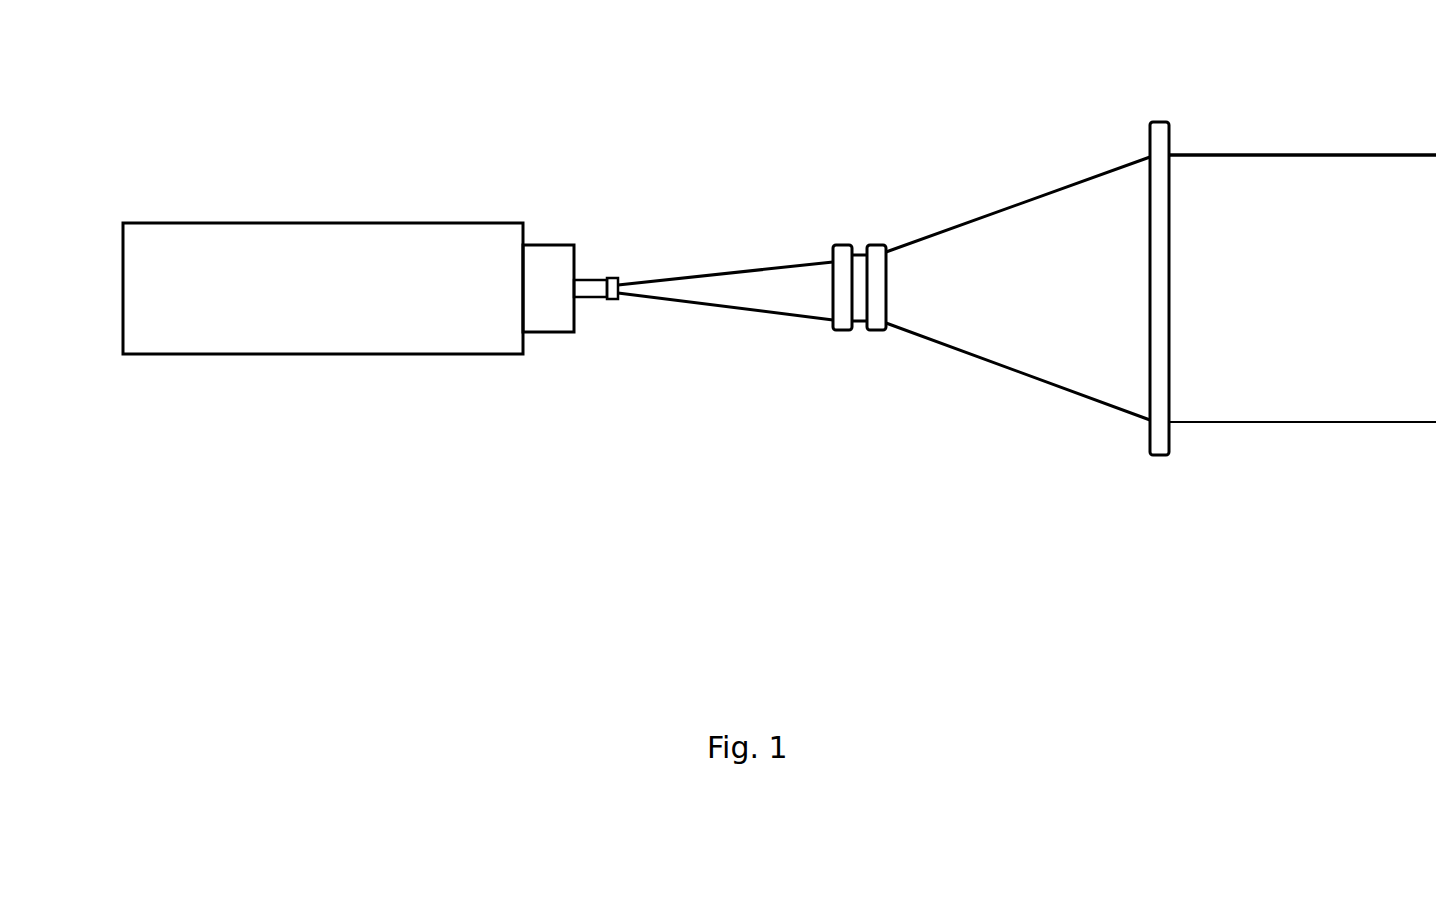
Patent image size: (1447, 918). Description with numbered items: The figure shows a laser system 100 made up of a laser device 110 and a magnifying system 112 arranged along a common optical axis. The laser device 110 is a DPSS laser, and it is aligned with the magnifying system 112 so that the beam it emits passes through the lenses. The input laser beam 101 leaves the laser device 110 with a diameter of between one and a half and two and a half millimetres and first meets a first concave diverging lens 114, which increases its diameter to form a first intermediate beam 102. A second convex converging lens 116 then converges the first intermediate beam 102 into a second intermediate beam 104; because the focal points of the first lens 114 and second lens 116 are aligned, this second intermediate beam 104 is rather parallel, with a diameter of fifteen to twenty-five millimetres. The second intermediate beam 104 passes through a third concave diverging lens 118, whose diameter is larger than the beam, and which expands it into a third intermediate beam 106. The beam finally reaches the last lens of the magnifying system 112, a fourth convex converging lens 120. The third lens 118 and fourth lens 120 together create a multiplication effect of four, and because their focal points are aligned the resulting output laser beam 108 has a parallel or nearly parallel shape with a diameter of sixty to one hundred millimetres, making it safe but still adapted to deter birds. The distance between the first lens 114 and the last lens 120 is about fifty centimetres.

The laser system 100 is at (607, 163).
The input laser beam 101 is at (596, 276).
The first intermediate beam 102 is at (753, 286).
The second intermediate beam 104 is at (857, 278).
The third intermediate beam 106 is at (1020, 250).
The output laser beam 108 is at (1323, 176).
The laser device 110 is at (400, 354).
The magnifying system 112 is at (928, 302).
The first concave diverging lens 114 is at (613, 299).
The second convex converging lens 116 is at (842, 330).
The third concave diverging lens 118 is at (880, 330).
The fourth convex converging lens 120 is at (1160, 455).